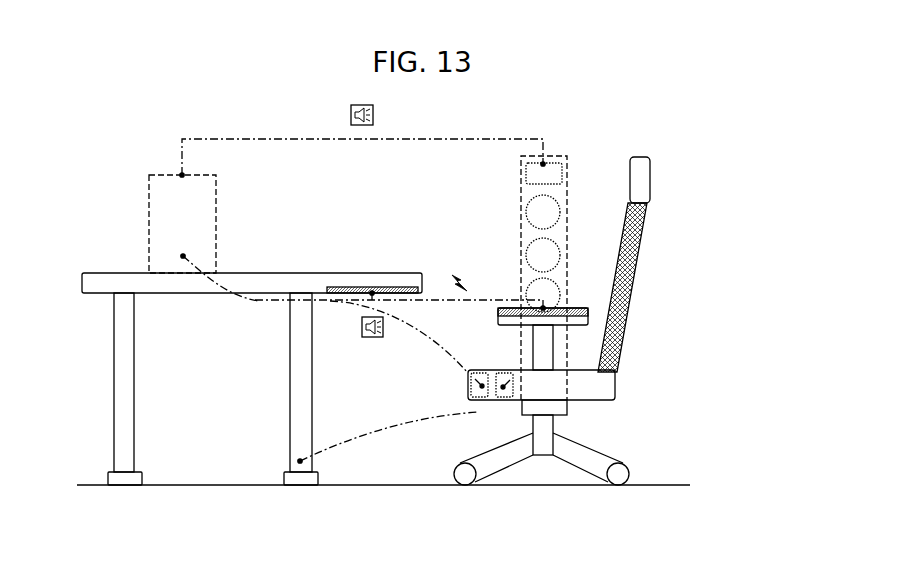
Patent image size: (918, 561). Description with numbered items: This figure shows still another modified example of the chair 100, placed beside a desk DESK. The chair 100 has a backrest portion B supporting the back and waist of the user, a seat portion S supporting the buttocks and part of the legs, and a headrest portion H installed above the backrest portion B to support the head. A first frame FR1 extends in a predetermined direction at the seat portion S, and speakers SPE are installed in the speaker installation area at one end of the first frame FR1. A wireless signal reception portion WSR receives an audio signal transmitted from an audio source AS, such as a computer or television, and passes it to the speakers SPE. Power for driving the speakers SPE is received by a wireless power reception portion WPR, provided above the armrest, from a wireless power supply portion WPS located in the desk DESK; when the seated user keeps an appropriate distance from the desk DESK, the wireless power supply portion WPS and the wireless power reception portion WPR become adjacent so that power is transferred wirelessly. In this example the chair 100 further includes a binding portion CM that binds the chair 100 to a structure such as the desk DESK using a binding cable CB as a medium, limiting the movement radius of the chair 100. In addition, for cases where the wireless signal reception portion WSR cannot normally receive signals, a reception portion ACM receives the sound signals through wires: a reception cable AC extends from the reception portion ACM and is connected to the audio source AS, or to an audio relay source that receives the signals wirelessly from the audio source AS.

The chair 100 is at (665, 155).
The headrest portion H is at (641, 178).
The backrest portion B is at (640, 228).
The seat portion S is at (606, 380).
The wireless power reception portion WPR is at (592, 320).
The wireless signal reception portion WSR is at (526, 178).
The speaker SPE is at (523, 229).
The first frame FR1 is at (573, 408).
The reception portion ACM is at (483, 400).
The binding portion CM is at (520, 400).
The audio source AS is at (168, 185).
The desk DESK is at (102, 280).
The wireless power supply portion WPS is at (351, 285).
The reception cable AC is at (260, 303).
The binding cable CB is at (355, 437).